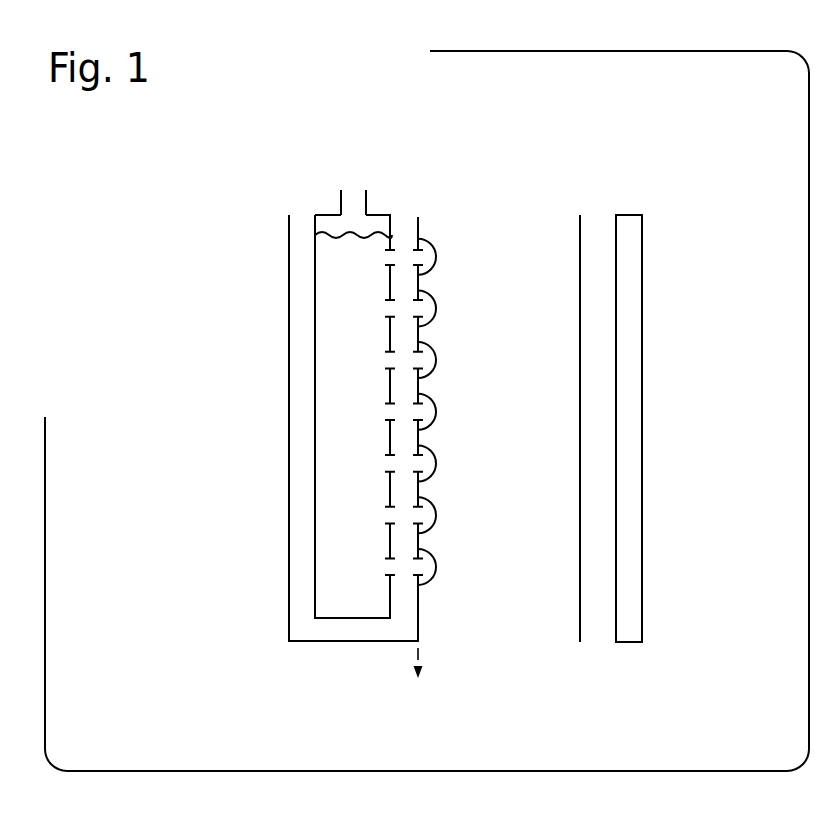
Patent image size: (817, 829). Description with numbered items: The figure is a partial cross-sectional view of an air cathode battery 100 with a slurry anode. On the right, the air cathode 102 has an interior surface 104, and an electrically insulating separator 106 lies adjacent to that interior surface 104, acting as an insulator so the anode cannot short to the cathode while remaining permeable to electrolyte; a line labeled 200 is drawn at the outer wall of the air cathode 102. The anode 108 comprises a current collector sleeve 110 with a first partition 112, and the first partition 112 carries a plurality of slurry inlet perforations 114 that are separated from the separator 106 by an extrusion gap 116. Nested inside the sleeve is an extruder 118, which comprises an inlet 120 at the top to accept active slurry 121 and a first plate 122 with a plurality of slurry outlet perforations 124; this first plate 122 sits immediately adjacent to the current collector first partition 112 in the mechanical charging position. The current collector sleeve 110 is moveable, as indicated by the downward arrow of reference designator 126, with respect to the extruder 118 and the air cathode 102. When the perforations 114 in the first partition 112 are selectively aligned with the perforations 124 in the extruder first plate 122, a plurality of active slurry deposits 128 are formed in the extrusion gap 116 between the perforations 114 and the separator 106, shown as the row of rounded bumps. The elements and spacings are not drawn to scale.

The battery 100 is at (722, 105).
The air cathode 102 is at (672, 239).
The interior surface 104 is at (604, 229).
The separator 106 is at (575, 355).
The anode 108 is at (250, 240).
The current collector sleeve 110 is at (338, 642).
The first partition 112 is at (418, 624).
The slurry inlet perforations 114 is at (400, 228).
The extrusion gap 116 is at (523, 455).
The extruder 118 is at (317, 636).
The inlet 120 is at (347, 172).
The active slurry 121 is at (368, 356).
The first plate 122 is at (390, 598).
The slurry outlet perforations 124 is at (397, 620).
The movement of the current collector sleeve 126 is at (420, 655).
The active slurry deposits 128 is at (435, 411).
The air cathode outer wall 200 is at (643, 395).